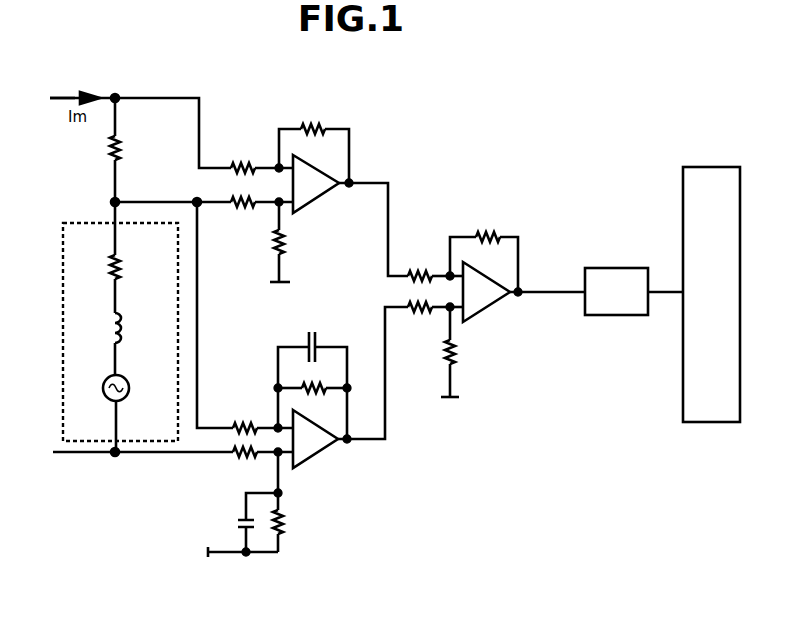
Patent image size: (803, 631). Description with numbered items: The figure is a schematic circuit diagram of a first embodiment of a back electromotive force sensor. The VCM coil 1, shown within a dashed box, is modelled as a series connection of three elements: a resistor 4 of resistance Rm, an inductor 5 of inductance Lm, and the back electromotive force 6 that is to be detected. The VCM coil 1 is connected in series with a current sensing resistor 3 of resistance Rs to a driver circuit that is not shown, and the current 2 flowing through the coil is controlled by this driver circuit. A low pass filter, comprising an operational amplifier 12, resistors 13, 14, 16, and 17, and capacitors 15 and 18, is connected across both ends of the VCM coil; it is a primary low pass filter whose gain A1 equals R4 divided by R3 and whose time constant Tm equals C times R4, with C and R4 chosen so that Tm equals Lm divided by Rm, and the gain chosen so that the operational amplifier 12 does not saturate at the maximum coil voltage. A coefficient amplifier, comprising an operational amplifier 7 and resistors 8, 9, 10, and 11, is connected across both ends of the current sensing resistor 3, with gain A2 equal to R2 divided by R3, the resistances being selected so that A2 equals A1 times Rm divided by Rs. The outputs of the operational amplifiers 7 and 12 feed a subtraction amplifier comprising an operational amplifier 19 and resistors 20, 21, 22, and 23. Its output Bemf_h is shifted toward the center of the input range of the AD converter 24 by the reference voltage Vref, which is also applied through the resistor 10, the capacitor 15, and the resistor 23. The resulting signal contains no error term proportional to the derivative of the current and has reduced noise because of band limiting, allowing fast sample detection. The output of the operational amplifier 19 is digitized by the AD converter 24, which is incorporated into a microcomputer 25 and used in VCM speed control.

The VCM coil 1 is at (92, 447).
The current 2 is at (55, 100).
The current sensing resistor 3 is at (110, 148).
The resistor 4 is at (112, 264).
The inductor 5 is at (112, 324).
The back electromotive force 6 is at (108, 391).
The operational amplifier 7 is at (325, 175).
The resistor 8 is at (233, 213).
The resistor 9 is at (232, 162).
The resistor 10 is at (275, 255).
The resistor 11 is at (302, 125).
The operational amplifier 12 is at (318, 458).
The resistor 13 is at (236, 420).
The resistor 14 is at (230, 466).
The capacitor 15 is at (232, 525).
The resistor 16 is at (285, 538).
The resistor 17 is at (325, 393).
The capacitor 18 is at (318, 342).
The operational amplifier 19 is at (480, 312).
The resistor 20 is at (400, 268).
The resistor 21 is at (410, 320).
The resistor 22 is at (497, 222).
The resistor 23 is at (463, 365).
The AD converter 24 is at (600, 267).
The microcomputer 25 is at (682, 385).